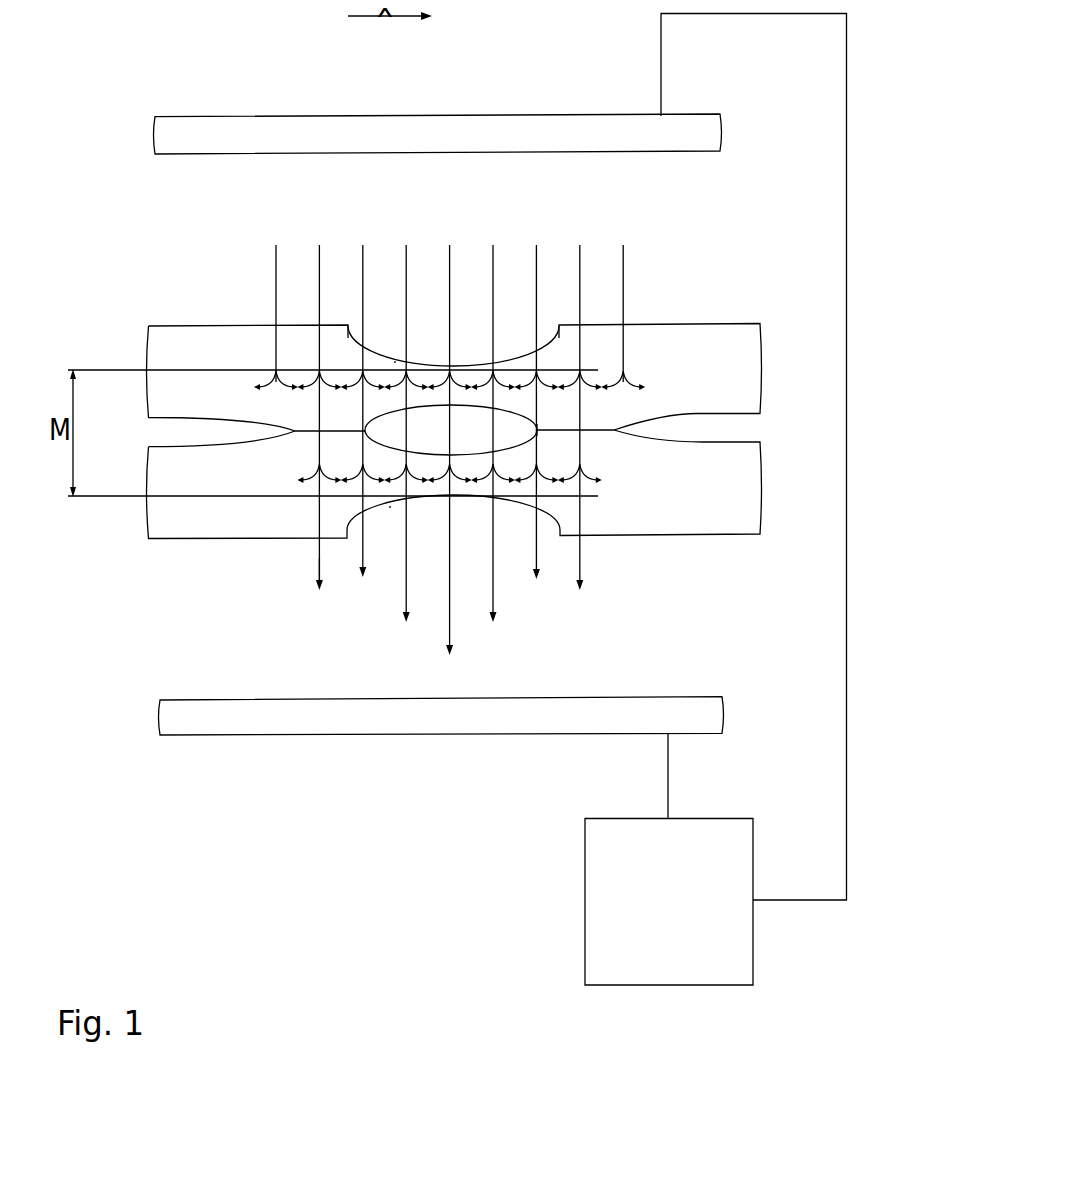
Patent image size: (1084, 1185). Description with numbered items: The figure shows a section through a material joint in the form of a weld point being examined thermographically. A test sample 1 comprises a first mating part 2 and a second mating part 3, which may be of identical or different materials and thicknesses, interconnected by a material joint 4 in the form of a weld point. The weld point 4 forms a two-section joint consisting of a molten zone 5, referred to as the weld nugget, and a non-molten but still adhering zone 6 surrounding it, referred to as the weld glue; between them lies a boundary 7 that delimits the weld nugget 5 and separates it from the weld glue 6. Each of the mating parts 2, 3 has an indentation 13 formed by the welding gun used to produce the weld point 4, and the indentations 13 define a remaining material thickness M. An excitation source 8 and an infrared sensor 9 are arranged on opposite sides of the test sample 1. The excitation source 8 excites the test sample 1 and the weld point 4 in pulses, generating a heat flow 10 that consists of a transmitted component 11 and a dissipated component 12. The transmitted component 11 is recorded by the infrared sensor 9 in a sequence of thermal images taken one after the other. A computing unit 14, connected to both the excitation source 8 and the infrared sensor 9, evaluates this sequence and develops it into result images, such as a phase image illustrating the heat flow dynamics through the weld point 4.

The test sample 1 is at (185, 262).
The first mating part 2 is at (665, 351).
The second mating part 3 is at (682, 514).
The material joint 4 is at (342, 311).
The molten zone 5 is at (435, 407).
The non-molten zone 6 is at (577, 396).
The boundary 7 is at (530, 421).
The excitation source 8 is at (527, 116).
The infrared sensor 9 is at (422, 722).
The heat flow 10 is at (484, 285).
The transmitted component 11 is at (315, 549).
The dissipated component 12 is at (313, 474).
The indentation 13 is at (387, 354).
The computing unit 14 is at (587, 832).